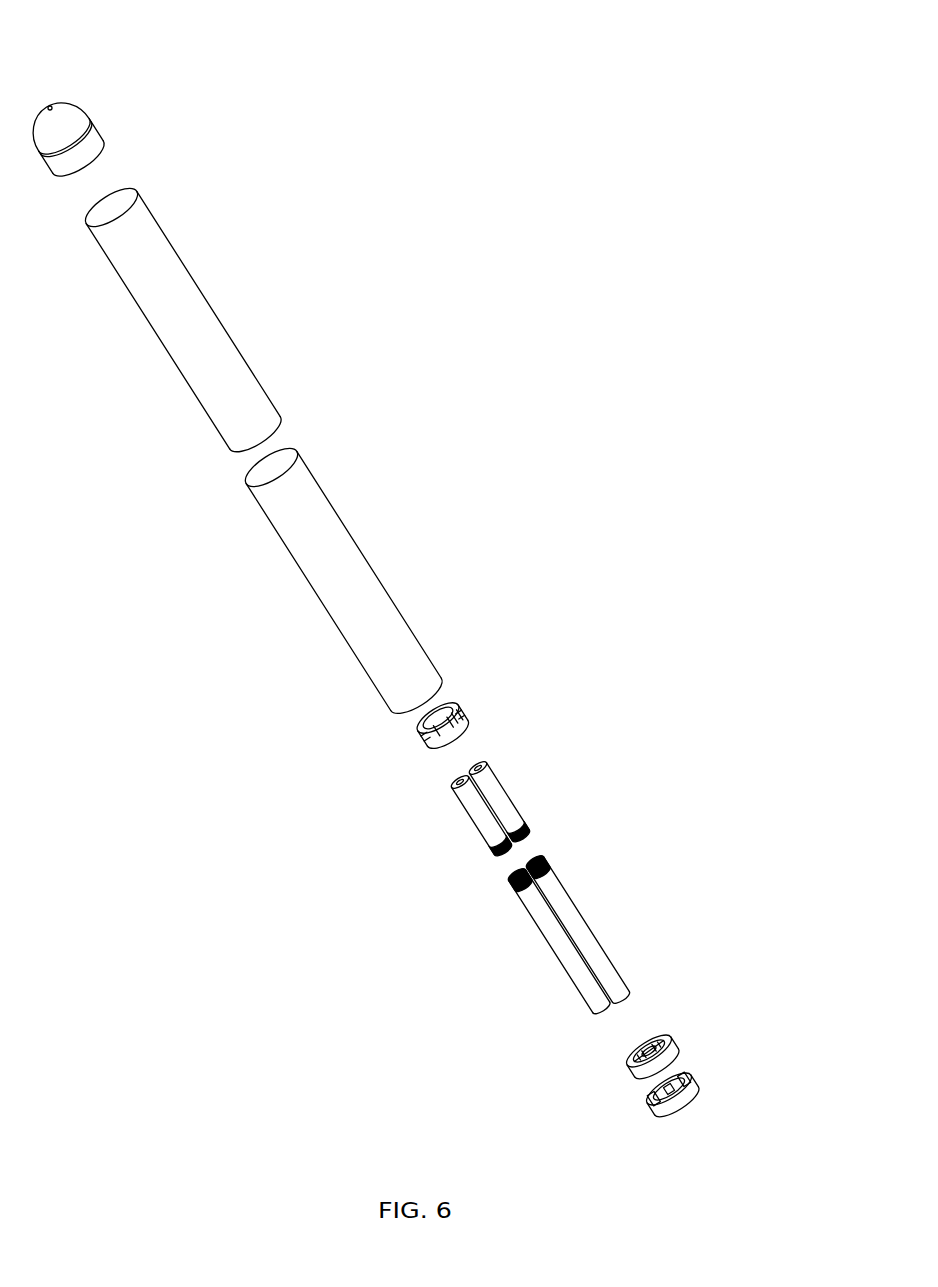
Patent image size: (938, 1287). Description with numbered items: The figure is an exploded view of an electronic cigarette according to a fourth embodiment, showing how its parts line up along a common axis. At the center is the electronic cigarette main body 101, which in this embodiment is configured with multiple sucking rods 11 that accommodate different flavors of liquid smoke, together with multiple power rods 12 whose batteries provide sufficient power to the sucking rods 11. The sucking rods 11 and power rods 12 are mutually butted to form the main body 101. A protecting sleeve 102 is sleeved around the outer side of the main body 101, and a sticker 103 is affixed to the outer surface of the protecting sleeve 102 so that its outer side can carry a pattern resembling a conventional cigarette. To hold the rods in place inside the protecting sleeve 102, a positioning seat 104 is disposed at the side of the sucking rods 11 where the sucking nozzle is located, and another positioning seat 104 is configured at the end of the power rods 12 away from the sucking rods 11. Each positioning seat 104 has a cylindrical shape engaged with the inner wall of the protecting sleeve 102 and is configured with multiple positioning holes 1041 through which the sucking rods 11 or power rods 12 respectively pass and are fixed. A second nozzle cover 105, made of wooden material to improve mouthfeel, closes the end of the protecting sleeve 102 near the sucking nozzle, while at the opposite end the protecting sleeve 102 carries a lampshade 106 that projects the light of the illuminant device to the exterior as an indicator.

The second nozzle cover 105 is at (75, 123).
The sticker 103 is at (205, 342).
The protecting sleeve 102 is at (365, 595).
The positioning seat 104 is at (452, 706).
The positioning hole 1041 is at (417, 723).
The electronic cigarette main body 101 is at (610, 649).
The sucking rod 11 is at (508, 812).
The power rod 12 is at (578, 925).
The lampshade 106 is at (702, 1082).